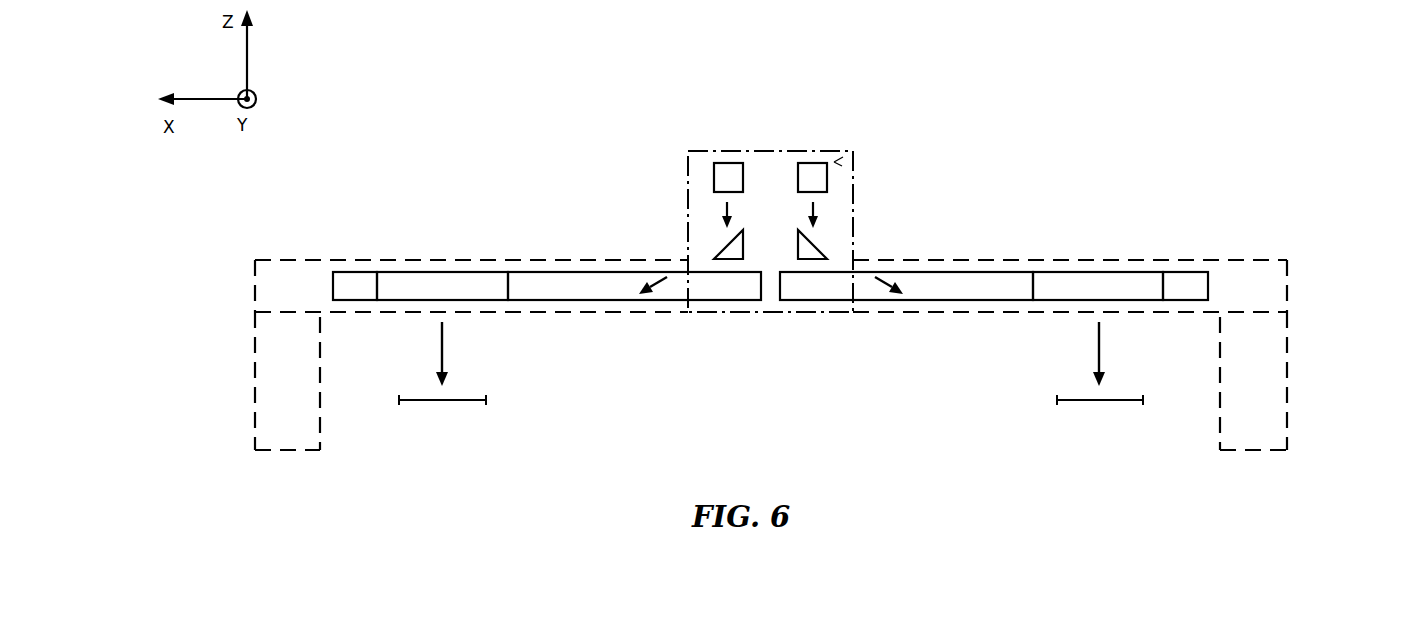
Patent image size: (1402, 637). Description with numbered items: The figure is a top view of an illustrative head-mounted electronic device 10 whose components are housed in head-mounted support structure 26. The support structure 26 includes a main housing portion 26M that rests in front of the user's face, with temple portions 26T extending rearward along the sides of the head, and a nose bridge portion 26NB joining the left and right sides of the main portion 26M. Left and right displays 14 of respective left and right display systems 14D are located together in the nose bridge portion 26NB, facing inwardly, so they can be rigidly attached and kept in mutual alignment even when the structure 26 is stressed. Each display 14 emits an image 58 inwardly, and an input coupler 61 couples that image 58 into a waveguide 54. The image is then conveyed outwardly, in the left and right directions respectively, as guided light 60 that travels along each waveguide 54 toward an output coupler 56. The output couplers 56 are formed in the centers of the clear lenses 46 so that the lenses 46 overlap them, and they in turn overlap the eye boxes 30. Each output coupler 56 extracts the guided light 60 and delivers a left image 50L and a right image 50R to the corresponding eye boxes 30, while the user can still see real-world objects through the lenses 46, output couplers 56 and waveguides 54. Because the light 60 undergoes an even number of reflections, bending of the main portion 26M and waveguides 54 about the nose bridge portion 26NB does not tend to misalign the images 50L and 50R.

The electronic device 10 is at (1211, 136).
The display 14 is at (729, 180).
The display system 14D is at (843, 160).
The head-mounted support structure 26 is at (140, 257).
The main housing portion 26M is at (275, 258).
The temple portion 26T is at (255, 375).
The nose bridge portion 26NB is at (717, 151).
The eye box 30 is at (486, 400).
The lens 46 is at (553, 237).
The left image 50L is at (443, 352).
The right image 50R is at (1099, 352).
The waveguide 54 is at (569, 282).
The output coupler 56 is at (395, 292).
The image 58 is at (727, 213).
The guided image light 60 is at (668, 278).
The input coupler 61 is at (735, 243).